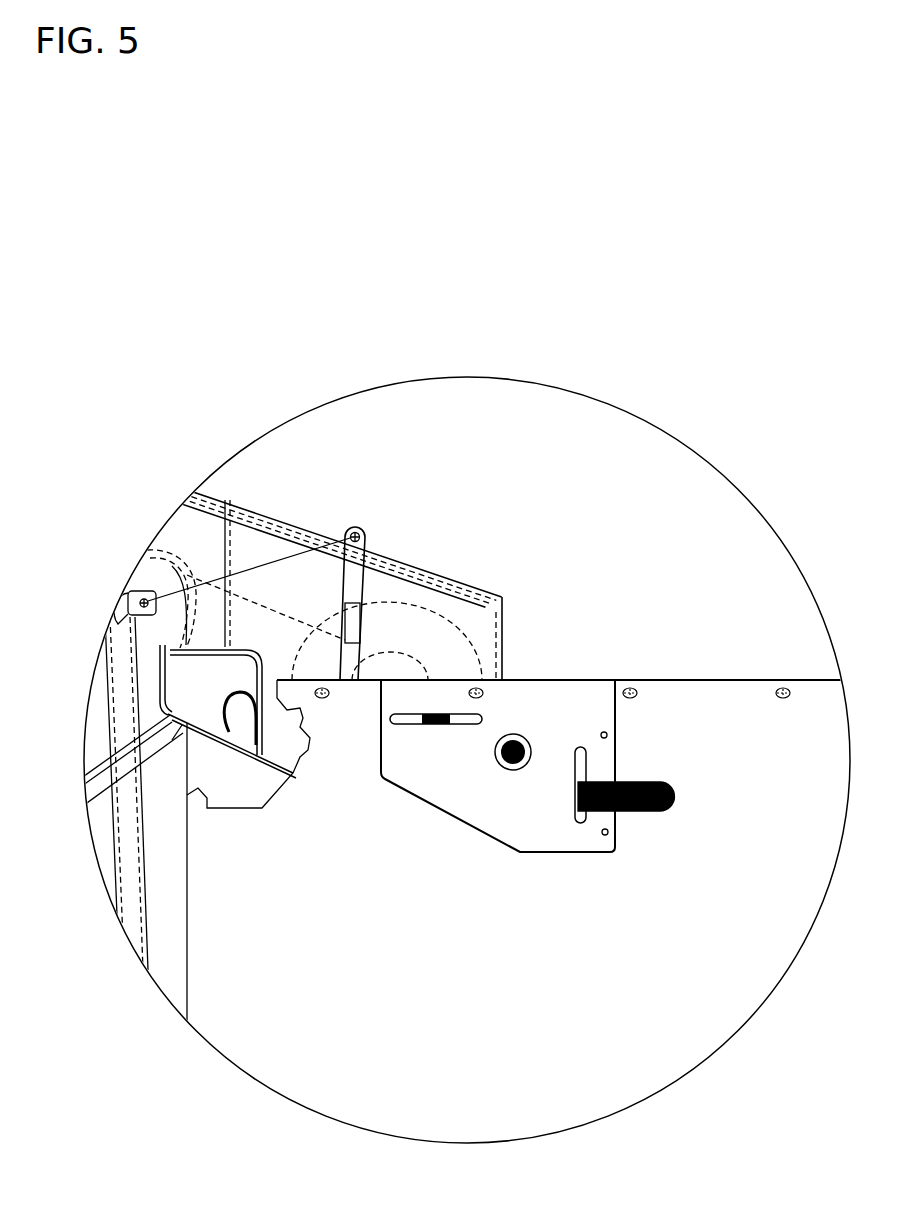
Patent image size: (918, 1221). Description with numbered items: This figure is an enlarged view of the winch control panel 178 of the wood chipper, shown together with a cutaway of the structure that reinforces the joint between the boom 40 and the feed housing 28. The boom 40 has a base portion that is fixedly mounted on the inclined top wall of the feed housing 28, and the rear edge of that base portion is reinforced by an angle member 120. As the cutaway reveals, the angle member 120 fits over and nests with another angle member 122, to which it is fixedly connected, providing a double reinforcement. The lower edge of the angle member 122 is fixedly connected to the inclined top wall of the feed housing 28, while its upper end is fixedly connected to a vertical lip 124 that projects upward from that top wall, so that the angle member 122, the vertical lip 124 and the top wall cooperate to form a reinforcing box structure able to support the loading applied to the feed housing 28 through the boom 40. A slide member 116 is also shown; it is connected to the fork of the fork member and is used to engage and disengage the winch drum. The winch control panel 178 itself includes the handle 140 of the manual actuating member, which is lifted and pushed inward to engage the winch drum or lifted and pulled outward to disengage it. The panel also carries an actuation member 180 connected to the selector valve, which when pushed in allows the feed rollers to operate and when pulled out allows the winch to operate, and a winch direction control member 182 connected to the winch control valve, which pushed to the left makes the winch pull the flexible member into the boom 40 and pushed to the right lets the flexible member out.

The feed housing 28 is at (705, 948).
The boom 40 is at (290, 506).
The slide member 116 is at (222, 742).
The angle member 120 is at (248, 647).
The angle member 122 is at (229, 732).
The vertical lip 124 is at (160, 663).
The handle end 140 is at (677, 797).
The winch control panel 178 is at (625, 732).
The actuation member 180 is at (518, 738).
The winch direction control member 182 is at (440, 715).